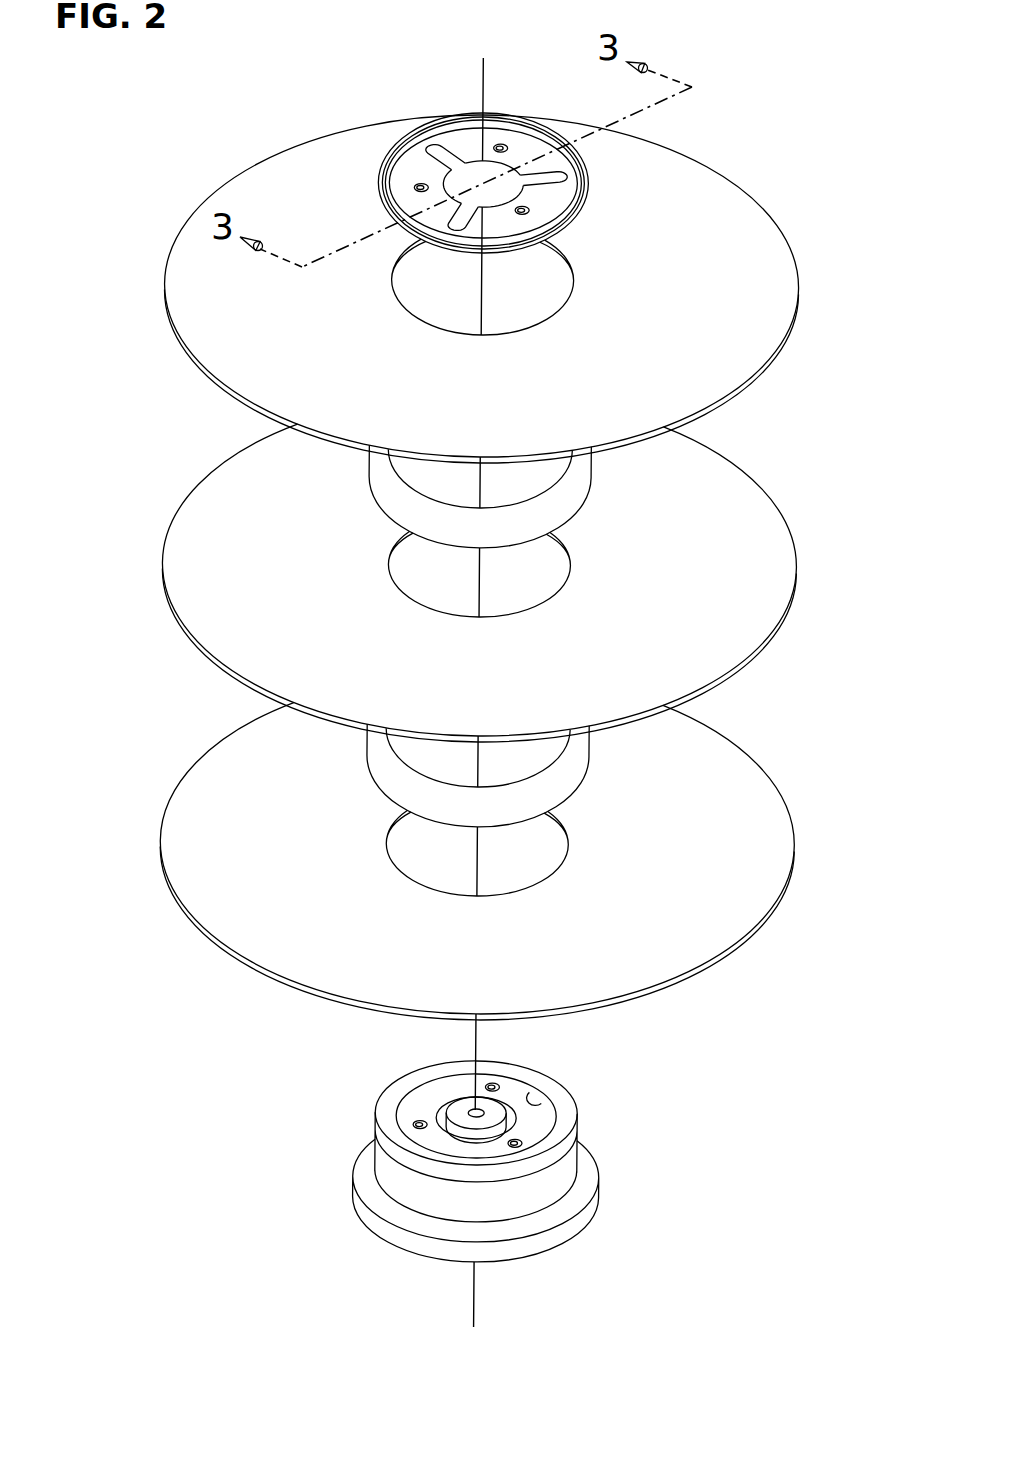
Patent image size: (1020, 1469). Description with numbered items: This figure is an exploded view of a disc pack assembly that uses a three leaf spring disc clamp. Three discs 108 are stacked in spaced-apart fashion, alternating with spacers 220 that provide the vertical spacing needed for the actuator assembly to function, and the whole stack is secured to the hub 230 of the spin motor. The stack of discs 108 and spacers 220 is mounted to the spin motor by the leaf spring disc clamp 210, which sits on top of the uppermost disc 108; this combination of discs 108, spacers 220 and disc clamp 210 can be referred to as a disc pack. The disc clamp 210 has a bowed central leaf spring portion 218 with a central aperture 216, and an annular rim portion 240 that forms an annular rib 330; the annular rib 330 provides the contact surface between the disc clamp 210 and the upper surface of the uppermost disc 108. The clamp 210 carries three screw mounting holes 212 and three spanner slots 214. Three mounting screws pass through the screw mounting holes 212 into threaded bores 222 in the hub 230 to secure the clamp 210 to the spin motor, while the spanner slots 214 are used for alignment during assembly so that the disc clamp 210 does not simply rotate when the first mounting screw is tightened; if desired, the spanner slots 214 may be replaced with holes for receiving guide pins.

The disc 108 is at (744, 224).
The leaf spring disc clamp 210 is at (558, 116).
The screw mounting hole 212 is at (503, 145).
The spanner slot 214 is at (416, 142).
The central aperture 216 is at (492, 190).
The bowed central leaf spring portion 218 is at (468, 142).
The spacer 220 is at (581, 497).
The threaded bore 222 is at (420, 1121).
The hub 230 is at (541, 1101).
The annular rim portion 240 is at (453, 247).
The annular rib 330 is at (577, 229).